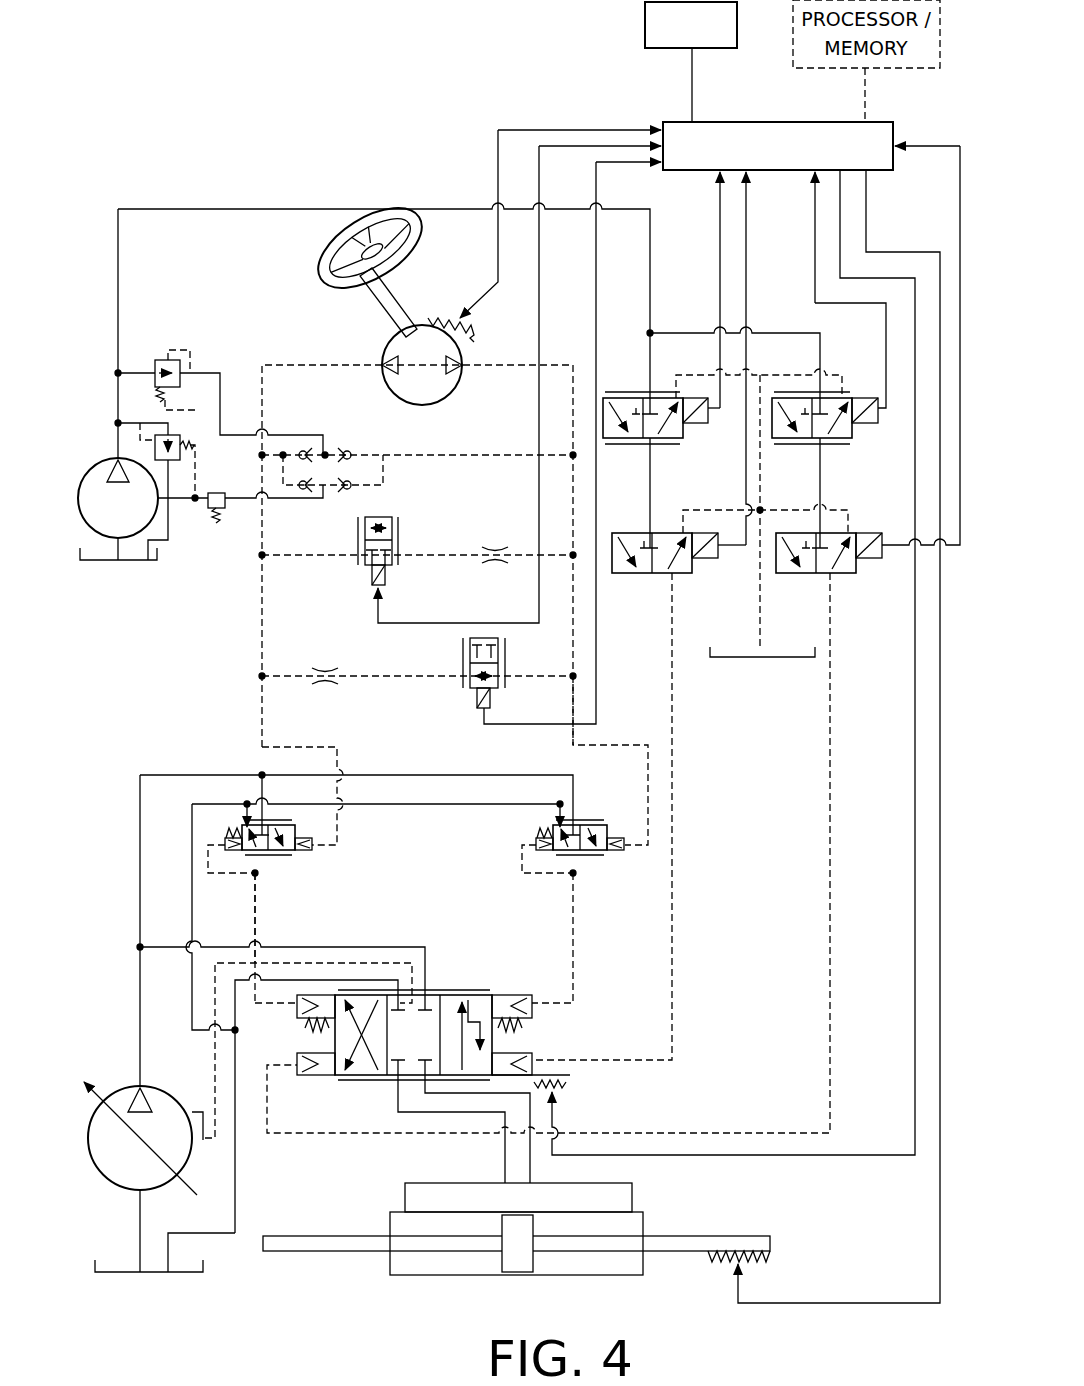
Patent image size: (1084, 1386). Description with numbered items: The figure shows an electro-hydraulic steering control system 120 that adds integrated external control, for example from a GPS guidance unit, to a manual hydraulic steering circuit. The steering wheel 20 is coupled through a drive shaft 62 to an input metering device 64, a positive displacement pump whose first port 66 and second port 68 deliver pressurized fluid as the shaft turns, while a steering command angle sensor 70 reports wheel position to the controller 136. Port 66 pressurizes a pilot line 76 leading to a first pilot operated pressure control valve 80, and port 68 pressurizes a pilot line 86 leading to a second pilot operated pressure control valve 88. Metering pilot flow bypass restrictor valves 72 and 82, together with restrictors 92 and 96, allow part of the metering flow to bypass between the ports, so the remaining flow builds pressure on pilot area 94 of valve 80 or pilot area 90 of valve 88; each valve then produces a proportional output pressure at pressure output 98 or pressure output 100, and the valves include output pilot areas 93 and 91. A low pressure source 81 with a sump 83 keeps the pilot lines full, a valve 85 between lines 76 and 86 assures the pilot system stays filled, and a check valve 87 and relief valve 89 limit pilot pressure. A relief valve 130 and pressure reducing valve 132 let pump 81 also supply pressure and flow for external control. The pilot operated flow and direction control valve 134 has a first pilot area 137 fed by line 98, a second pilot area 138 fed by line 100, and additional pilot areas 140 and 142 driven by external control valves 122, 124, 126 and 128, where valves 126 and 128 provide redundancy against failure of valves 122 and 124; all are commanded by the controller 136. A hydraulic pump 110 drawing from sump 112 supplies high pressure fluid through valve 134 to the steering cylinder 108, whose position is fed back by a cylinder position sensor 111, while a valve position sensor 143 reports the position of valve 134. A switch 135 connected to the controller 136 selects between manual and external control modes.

The steering wheel 20 is at (328, 270).
The drive shaft 62 is at (402, 298).
The input metering device 64 is at (380, 348).
The first port 66 is at (383, 367).
The second port 68 is at (462, 368).
The steering command angle sensor 70 is at (476, 332).
The metering pilot flow bypass restrictor valve 72 is at (398, 540).
The pilot line 76 is at (262, 600).
The first pilot operated pressure control valve 80 is at (284, 860).
The low pressure source 81 is at (102, 462).
The metering pilot flow bypass restrictor valve 82 is at (464, 688).
The sump 83 is at (100, 560).
The valve 85 is at (340, 446).
The pilot line 86 is at (573, 702).
The check valve 87 is at (336, 494).
The second pilot operated pressure control valve 88 is at (598, 860).
The relief valve 89 is at (212, 524).
The pilot area 90 is at (616, 838).
The output pilot area 91 is at (536, 845).
The restrictor 92 is at (496, 548).
The output pilot area 93 is at (225, 845).
The pilot area 94 is at (312, 846).
The restrictor 96 is at (325, 688).
The pressure output 98 is at (254, 895).
The pressure output 100 is at (573, 958).
The steering cylinder 108 is at (410, 1278).
The hydraulic pump 110 is at (126, 1090).
The cylinder position sensor 111 is at (840, 1305).
The sump 112 is at (126, 1266).
The electro-hydraulic steering control system 120 is at (150, 116).
The external control valve 122 is at (692, 446).
The external control valve 124 is at (862, 446).
The external control valve 126 is at (636, 576).
The external control valve 128 is at (848, 576).
The relief valve 130 is at (155, 445).
The pressure reducing valve 132 is at (158, 360).
The pilot operated flow and direction control valve 134 is at (458, 990).
The switch 135 is at (645, 26).
The controller 136 is at (757, 122).
The first pilot area 137 is at (318, 995).
The second pilot area 138 is at (510, 996).
The pilot area 140 is at (326, 1078).
The pilot area 142 is at (532, 1060).
The valve position sensor 143 is at (568, 1084).